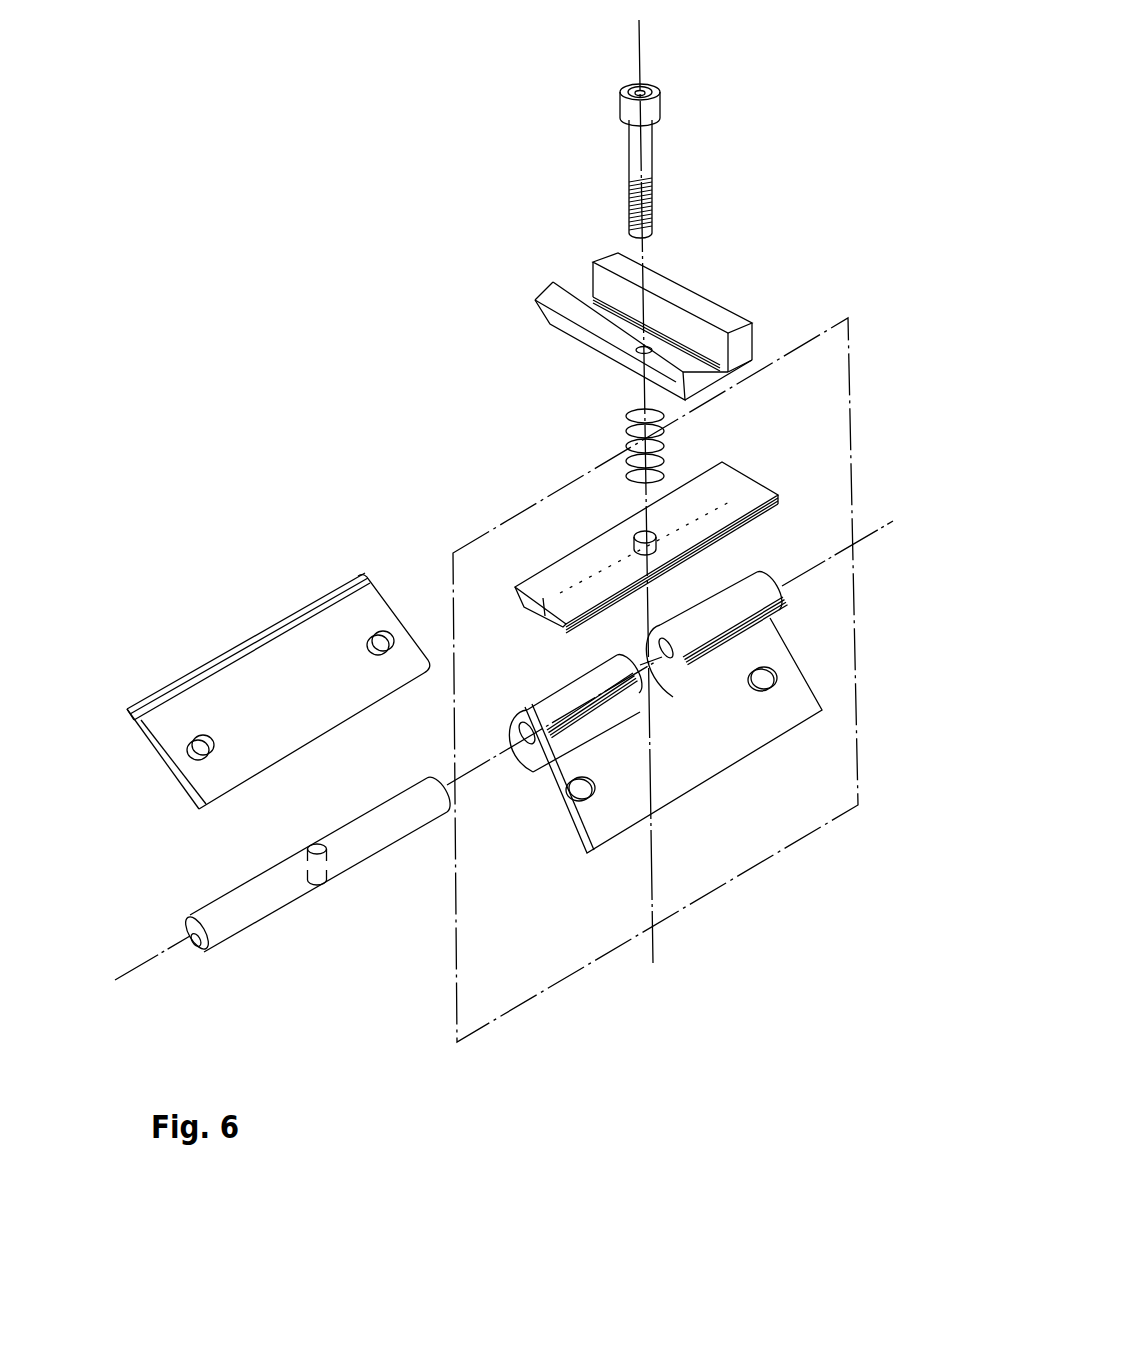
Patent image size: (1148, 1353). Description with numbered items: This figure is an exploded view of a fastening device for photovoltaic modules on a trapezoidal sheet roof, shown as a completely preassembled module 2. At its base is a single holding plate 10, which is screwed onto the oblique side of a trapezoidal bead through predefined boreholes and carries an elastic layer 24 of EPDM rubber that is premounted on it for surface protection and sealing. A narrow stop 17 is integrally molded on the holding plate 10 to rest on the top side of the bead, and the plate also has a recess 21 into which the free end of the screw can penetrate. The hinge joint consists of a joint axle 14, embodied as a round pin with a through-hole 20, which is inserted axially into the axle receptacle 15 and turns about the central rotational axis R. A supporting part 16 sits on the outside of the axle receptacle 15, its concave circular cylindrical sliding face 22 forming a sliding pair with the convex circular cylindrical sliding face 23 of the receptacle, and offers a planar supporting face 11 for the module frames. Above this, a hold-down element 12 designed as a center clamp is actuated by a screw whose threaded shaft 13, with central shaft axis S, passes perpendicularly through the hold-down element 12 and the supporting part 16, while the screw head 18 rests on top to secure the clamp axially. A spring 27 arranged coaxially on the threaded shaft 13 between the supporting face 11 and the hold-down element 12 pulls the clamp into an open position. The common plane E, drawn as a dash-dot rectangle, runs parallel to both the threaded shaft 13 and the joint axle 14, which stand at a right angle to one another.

The hinge 2 is at (199, 940).
The holding plate 10 is at (707, 757).
The supporting face 11 is at (588, 557).
The hold-down element 12 is at (685, 288).
The threaded shaft 13 is at (655, 143).
The joint axle 14 is at (377, 845).
The axle receptacle 15 is at (513, 712).
The supporting part 16 is at (757, 483).
The stop 17 is at (512, 742).
The screw head 18 is at (656, 88).
The through-hole 20 is at (319, 842).
The recess 21 is at (680, 697).
The concave circular cylindrical sliding face 22 is at (542, 622).
The convex circular cylindrical sliding face 23 is at (547, 702).
The elastic layer 24 is at (303, 728).
The spring 27 is at (667, 437).
The central shaft axis S is at (642, 52).
The central rotational axis R is at (878, 518).
The common plane E is at (820, 333).